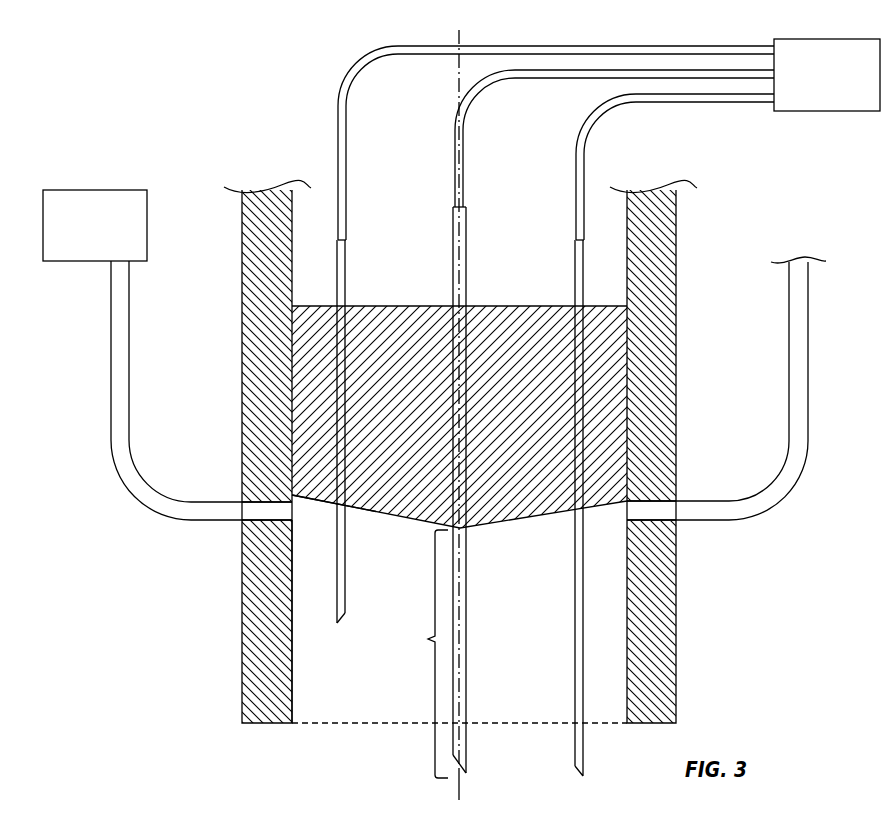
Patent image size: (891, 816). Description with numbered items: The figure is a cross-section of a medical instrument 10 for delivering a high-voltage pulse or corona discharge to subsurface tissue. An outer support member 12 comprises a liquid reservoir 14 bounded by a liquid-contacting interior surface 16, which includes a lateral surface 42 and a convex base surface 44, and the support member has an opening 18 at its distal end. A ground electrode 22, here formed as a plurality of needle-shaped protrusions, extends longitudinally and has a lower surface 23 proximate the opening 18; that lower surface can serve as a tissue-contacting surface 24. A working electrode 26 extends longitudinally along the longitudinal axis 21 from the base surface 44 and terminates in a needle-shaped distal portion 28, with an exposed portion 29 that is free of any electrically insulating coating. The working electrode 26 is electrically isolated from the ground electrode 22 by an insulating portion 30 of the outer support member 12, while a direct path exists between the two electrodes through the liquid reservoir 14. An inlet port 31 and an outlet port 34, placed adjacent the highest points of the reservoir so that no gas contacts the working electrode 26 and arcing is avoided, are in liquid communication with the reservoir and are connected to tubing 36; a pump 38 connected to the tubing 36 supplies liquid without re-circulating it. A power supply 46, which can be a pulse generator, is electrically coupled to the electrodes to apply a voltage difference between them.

The medical instrument 10 is at (163, 171).
The outer support member 12 is at (676, 604).
The liquid reservoir 14 is at (315, 668).
The liquid-contacting interior surface 16 is at (297, 539).
The opening 18 is at (600, 722).
The longitudinal axis 21 is at (460, 787).
The ground electrode 22 is at (335, 575).
The lower surface 23 is at (346, 613).
The tissue-contacting surface 24 is at (583, 742).
The working electrode 26 is at (467, 600).
The needle-shaped distal portion 28 is at (467, 750).
The exposed portion 29 is at (426, 654).
The insulating portion 30 is at (520, 379).
The inlet port 31 is at (267, 522).
The outlet port 34 is at (653, 512).
The tubing 36 is at (111, 386).
The pump 38 is at (85, 236).
The lateral surface 42 is at (284, 624).
The base surface 44 is at (315, 493).
The power supply 46 is at (816, 85).